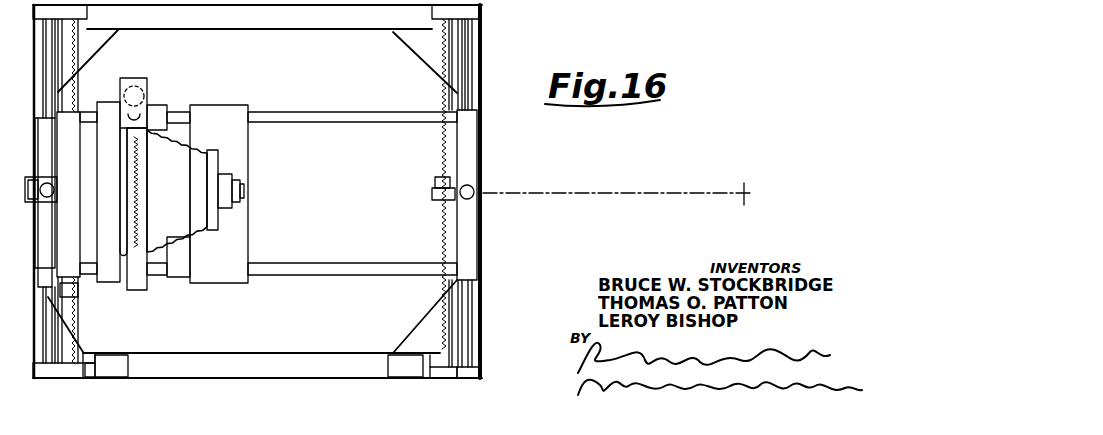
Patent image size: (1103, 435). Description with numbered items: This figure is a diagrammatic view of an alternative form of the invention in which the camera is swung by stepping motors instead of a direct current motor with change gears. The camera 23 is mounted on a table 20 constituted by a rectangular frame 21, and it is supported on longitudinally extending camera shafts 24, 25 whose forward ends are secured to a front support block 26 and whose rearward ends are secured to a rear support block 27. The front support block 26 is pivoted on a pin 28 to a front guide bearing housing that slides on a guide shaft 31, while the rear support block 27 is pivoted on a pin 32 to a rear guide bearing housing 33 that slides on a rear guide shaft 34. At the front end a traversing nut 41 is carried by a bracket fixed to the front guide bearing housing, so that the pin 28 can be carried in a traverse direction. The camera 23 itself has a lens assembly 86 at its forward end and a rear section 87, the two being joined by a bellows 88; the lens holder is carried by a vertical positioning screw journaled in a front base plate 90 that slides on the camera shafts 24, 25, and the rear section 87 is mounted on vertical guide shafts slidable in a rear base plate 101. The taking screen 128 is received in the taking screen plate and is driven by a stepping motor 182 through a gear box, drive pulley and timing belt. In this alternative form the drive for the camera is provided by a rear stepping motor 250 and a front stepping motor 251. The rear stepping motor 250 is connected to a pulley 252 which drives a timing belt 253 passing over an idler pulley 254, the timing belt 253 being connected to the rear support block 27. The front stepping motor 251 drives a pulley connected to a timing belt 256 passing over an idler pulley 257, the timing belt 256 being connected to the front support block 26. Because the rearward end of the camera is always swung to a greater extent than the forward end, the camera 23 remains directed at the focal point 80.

The table 20 is at (341, 30).
The rectangular frame 21 is at (259, 20).
The camera 23 is at (199, 146).
The camera shaft 24 is at (366, 264).
The camera shaft 25 is at (351, 124).
The front support block 26 is at (468, 150).
The rear support block 27 is at (78, 112).
The pin 28 is at (475, 190).
The guide shaft 31 is at (470, 100).
The pin 32 is at (55, 181).
The rear guide bearing housing 33 is at (47, 228).
The rear guide shaft 34 is at (61, 302).
The traversing nut 41 is at (435, 183).
The focal point 80 is at (750, 190).
The lens assembly 86 is at (245, 191).
The rear section 87 is at (147, 285).
The bellows 88 is at (199, 228).
The front base plate 90 is at (251, 157).
The rear base plate 101 is at (168, 285).
The taking screen 128 is at (143, 165).
The stepping motor 182 is at (140, 80).
The rear stepping motor 250 is at (128, 363).
The front stepping motor 251 is at (392, 367).
The pulley 252 is at (87, 352).
The timing belt 253 is at (82, 55).
The idler pulley 254 is at (85, 22).
The timing belt 256 is at (438, 298).
The idler pulley 257 is at (438, 30).